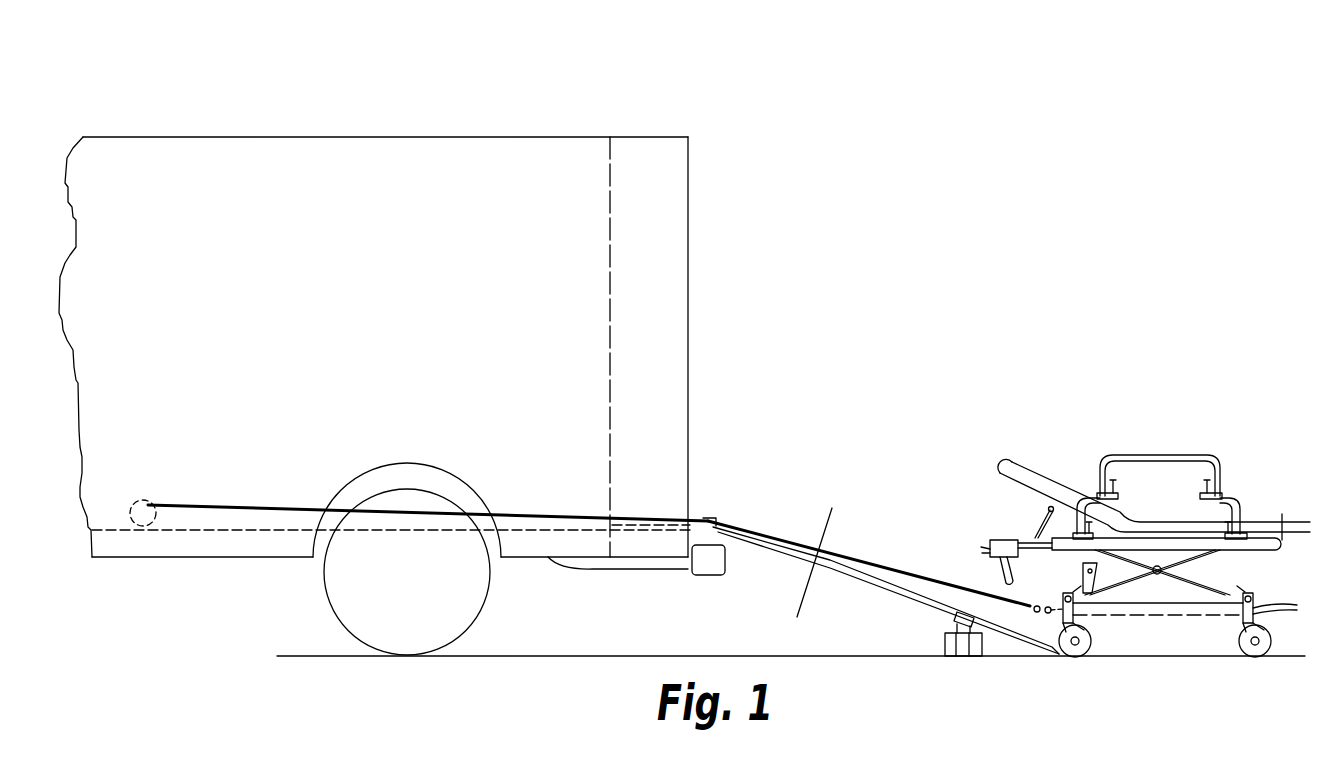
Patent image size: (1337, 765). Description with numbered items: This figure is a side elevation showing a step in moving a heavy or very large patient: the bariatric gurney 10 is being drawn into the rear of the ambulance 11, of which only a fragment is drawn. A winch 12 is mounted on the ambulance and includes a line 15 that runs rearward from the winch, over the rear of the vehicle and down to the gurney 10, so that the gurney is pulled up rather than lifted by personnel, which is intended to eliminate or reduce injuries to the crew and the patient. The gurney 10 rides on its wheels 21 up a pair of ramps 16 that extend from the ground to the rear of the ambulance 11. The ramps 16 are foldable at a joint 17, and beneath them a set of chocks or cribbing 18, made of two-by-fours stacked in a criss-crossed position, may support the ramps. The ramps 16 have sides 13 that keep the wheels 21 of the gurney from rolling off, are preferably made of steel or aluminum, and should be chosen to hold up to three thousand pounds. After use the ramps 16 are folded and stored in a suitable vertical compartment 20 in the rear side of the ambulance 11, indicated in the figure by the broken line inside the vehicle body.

The bariatric gurney 10 is at (1176, 434).
The ambulance 11 is at (634, 104).
The winch 12 is at (146, 486).
The sides 13 is at (832, 508).
The line 15 is at (840, 553).
The ramps 16 is at (882, 590).
The joint 17 is at (962, 614).
The chocks or cribbing 18 is at (945, 640).
The vertical compartment 20 is at (653, 300).
The wheels 21 is at (1092, 640).